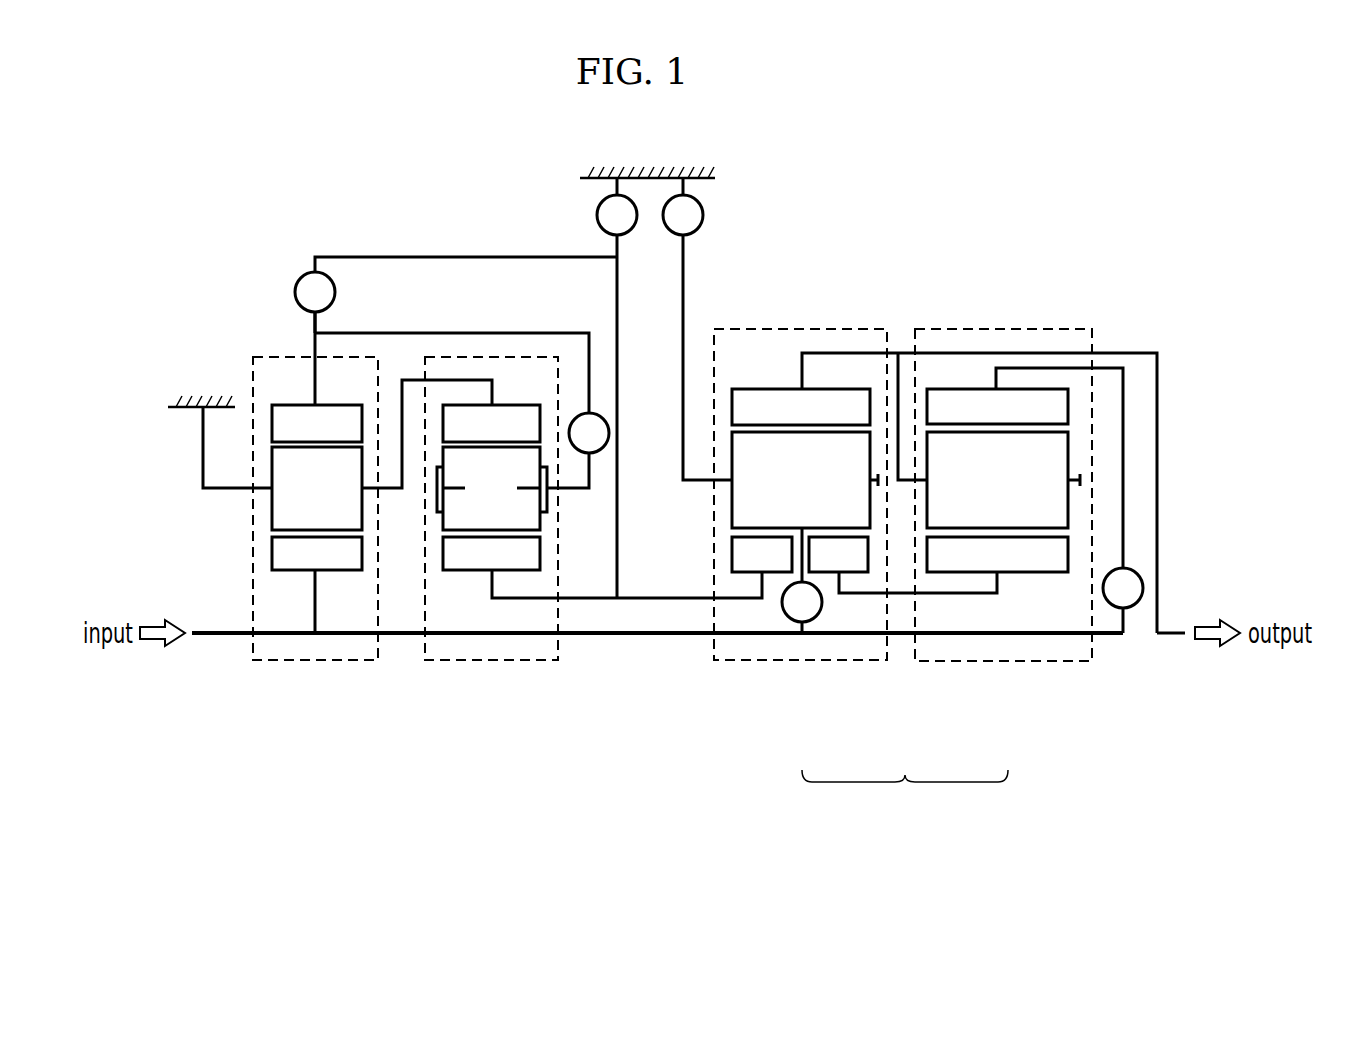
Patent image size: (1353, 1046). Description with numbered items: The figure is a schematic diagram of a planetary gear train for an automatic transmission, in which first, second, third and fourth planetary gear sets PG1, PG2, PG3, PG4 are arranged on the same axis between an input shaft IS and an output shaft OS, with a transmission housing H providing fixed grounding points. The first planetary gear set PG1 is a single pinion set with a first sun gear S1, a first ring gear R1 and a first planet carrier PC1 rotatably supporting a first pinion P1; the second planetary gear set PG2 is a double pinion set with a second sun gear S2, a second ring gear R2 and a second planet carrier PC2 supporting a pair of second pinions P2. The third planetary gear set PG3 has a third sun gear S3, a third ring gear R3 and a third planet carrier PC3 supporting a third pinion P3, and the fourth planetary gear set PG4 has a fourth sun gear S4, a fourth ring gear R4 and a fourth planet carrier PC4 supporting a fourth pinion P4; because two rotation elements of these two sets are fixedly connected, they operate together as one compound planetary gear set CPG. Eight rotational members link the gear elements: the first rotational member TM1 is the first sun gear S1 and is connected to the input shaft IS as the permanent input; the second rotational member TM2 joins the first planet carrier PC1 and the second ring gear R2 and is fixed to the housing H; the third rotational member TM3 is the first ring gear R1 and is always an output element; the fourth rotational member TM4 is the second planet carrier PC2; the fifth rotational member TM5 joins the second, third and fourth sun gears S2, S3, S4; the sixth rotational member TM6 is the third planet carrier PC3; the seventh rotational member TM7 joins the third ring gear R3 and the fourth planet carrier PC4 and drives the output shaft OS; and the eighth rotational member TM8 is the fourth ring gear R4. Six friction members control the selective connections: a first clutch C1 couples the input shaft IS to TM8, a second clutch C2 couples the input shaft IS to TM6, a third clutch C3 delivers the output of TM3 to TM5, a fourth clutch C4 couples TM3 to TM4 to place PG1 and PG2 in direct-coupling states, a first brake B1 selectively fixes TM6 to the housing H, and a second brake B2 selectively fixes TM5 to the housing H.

The input shaft IS is at (210, 637).
The output shaft OS is at (1165, 637).
The transmission housing H is at (205, 393).
The first planetary gear set PG1 is at (315, 668).
The second planetary gear set PG2 is at (490, 668).
The third planetary gear set PG3 is at (800, 670).
The fourth planetary gear set PG4 is at (1010, 670).
The compound planetary gear set CPG is at (905, 798).
The first sun gear S1 is at (317, 553).
The first pinion P1 is at (317, 488).
The first ring gear R1 is at (317, 423).
The second sun gear S2 is at (491, 553).
The second pinions P2 is at (491, 488).
The second ring gear R2 is at (491, 423).
The third sun gear S3 is at (800, 554).
The third pinion P3 is at (801, 480).
The third ring gear R3 is at (801, 407).
The fourth sun gear S4 is at (997, 554).
The fourth pinion P4 is at (997, 480).
The fourth ring gear R4 is at (997, 406).
The first planet carrier PC1 is at (270, 490).
The second planet carrier PC2 is at (549, 500).
The third planet carrier PC3 is at (720, 486).
The fourth planet carrier PC4 is at (1080, 488).
The first rotational member TM1 is at (317, 601).
The second rotational member TM2 is at (413, 378).
The third rotational member TM3 is at (474, 332).
The fourth rotational member TM4 is at (591, 468).
The fifth rotational member TM5 is at (668, 600).
The sixth rotational member TM6 is at (685, 290).
The seventh rotational member TM7 is at (946, 350).
The eighth rotational member TM8 is at (1125, 423).
The first brake B1 is at (683, 206).
The second brake B2 is at (617, 206).
The first clutch C1 is at (1123, 600).
The second clutch C2 is at (802, 580).
The third clutch C3 is at (456, 295).
The fourth clutch C4 is at (589, 433).